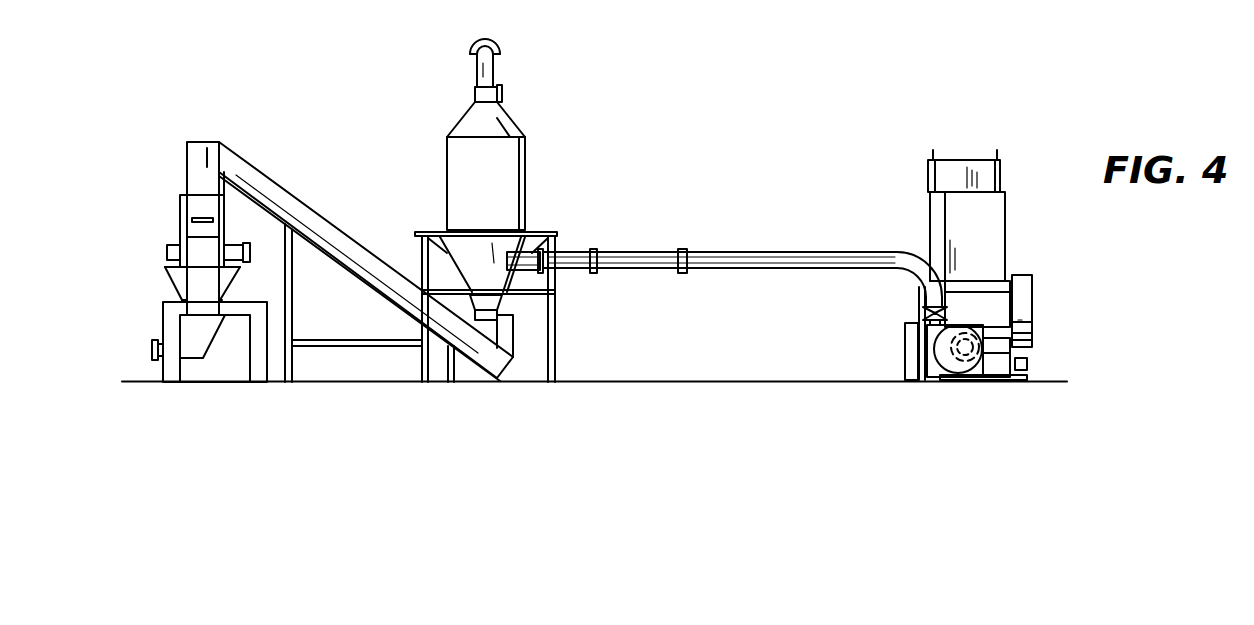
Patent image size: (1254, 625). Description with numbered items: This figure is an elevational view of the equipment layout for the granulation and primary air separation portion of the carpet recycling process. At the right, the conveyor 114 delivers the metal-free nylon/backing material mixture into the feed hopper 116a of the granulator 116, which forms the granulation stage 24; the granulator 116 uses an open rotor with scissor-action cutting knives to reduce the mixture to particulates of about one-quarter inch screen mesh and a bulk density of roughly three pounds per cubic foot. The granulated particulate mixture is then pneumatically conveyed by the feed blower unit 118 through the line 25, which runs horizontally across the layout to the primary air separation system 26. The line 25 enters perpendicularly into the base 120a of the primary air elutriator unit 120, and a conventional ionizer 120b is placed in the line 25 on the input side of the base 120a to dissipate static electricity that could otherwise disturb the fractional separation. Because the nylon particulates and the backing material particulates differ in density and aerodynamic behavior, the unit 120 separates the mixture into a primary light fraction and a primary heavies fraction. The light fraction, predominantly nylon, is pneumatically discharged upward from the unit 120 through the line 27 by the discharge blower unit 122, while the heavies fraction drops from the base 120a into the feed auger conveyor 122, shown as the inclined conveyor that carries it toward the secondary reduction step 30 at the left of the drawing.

The granulation stage 24 is at (1046, 288).
The line 25 is at (757, 253).
The primary air separation system 26 is at (583, 137).
The line 27 is at (490, 72).
The secondary reduction step 30 is at (128, 252).
The conveyor 114 is at (988, 173).
The granulator 116 is at (998, 318).
The feed hopper 116a is at (995, 238).
The feed blower unit 118 is at (920, 353).
The primary air elutriator unit 120 is at (502, 173).
The elutriator base 120a is at (437, 242).
The ionizer 120b is at (557, 243).
The discharge blower unit 122 is at (303, 207).